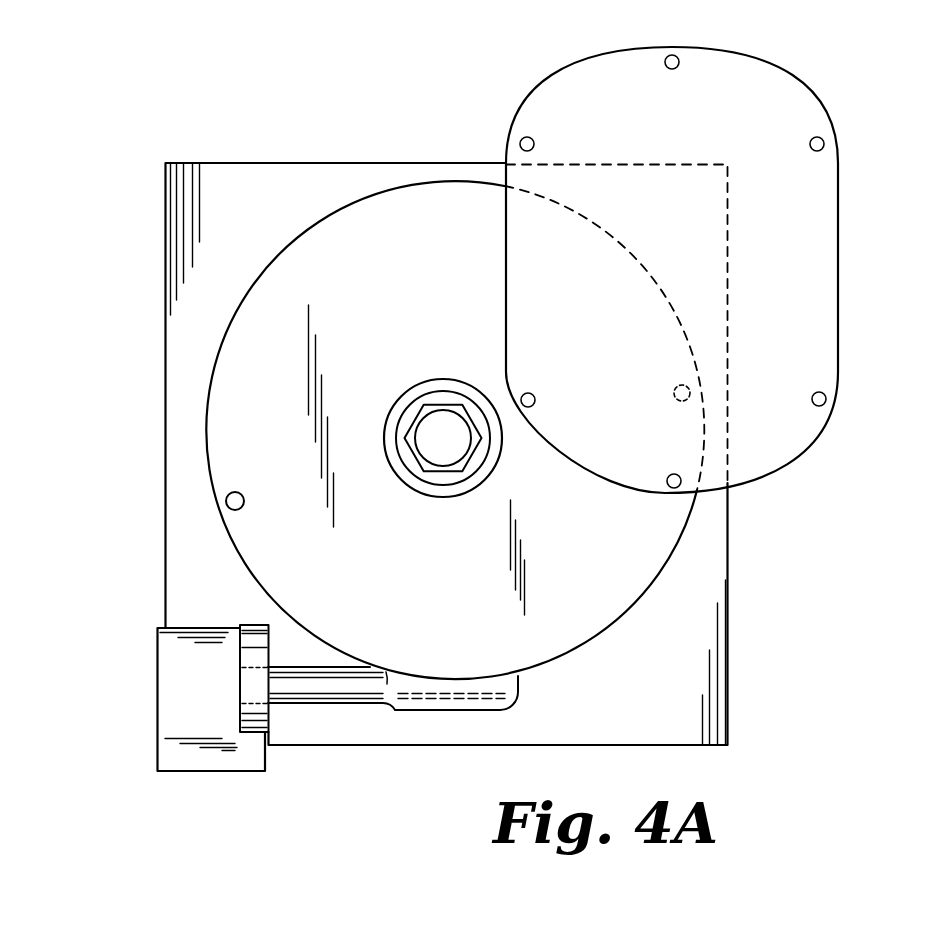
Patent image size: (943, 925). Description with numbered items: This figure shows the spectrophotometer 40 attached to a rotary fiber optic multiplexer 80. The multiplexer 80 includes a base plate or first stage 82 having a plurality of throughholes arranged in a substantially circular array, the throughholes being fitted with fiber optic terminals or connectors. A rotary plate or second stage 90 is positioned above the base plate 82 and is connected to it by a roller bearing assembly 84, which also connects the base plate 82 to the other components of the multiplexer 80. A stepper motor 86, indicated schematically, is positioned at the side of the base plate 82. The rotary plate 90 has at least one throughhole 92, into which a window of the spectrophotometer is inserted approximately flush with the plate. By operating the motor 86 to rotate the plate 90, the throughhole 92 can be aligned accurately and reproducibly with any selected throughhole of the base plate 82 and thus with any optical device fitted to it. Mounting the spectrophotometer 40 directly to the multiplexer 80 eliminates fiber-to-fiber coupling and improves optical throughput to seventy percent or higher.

The spectrophotometer 40 is at (805, 84).
The multiplexer 80 is at (93, 337).
The base plate or first stage 82 is at (168, 422).
The roller bearing assembly 84 is at (412, 388).
The stepper motor 86 is at (214, 708).
The rotary plate or second stage 90 is at (660, 566).
The throughhole 92 is at (237, 491).